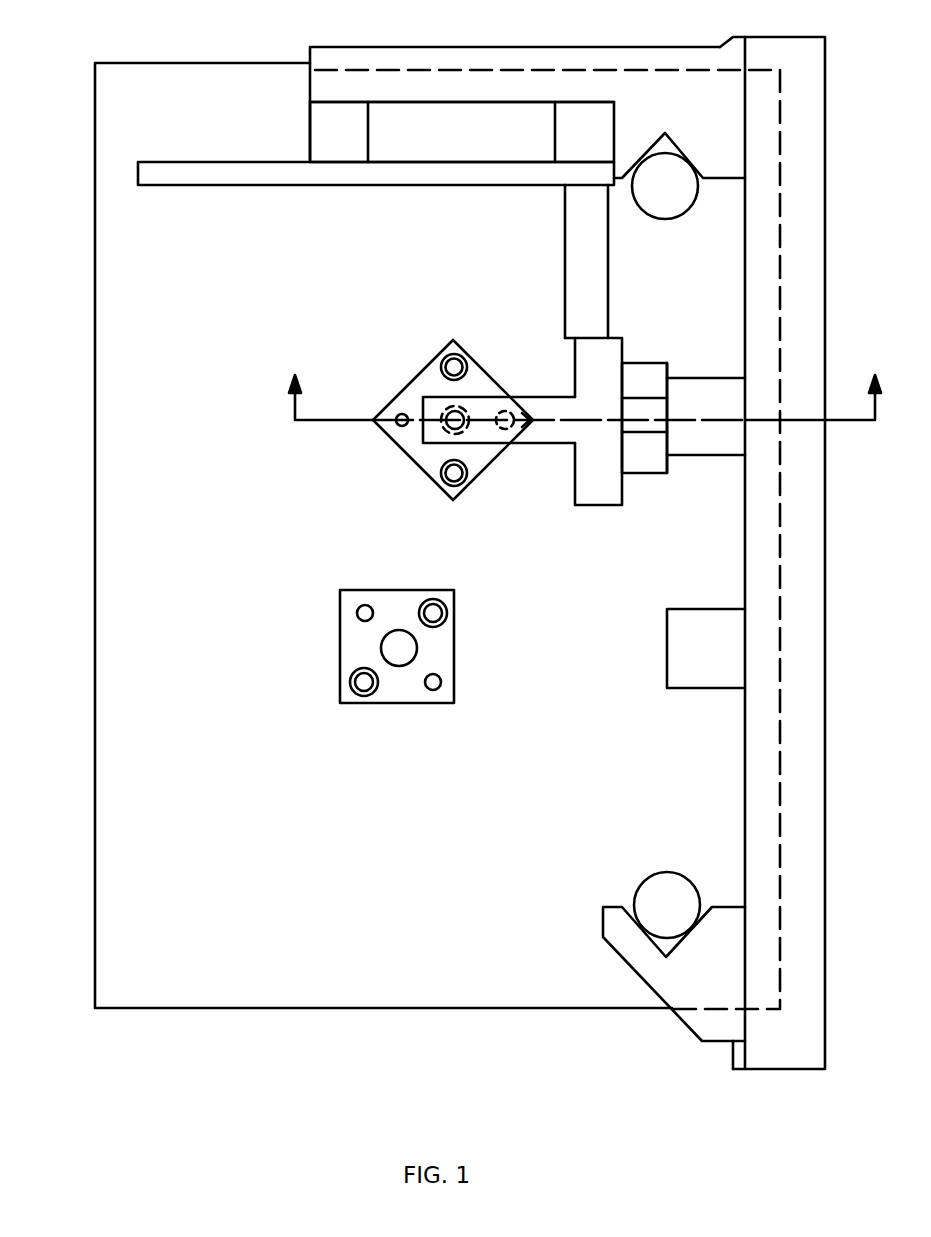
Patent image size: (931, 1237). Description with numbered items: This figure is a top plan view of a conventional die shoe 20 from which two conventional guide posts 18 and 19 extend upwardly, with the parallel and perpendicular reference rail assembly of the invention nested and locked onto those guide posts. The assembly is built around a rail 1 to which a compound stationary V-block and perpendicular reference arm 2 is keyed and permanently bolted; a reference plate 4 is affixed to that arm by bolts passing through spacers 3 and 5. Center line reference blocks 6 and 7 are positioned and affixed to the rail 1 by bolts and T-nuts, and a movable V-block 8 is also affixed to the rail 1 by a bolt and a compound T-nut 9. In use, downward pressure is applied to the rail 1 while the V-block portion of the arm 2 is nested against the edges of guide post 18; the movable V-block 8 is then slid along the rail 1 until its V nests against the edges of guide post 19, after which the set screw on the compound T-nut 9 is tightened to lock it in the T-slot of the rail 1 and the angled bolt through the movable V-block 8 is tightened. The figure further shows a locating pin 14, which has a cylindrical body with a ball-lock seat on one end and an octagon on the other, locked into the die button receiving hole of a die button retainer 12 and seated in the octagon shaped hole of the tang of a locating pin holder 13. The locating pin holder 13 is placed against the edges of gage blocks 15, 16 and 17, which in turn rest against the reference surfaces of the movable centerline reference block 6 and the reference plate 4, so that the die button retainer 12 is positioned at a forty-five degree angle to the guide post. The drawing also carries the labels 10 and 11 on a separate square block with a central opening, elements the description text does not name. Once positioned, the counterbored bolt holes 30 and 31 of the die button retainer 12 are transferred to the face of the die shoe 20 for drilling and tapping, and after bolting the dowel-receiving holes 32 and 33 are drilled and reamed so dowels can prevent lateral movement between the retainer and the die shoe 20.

The rail 1 is at (790, 522).
The compound stationary V-block and perpendicular reference arm 2 is at (377, 90).
The spacer 3 is at (337, 140).
The reference plate 4 is at (422, 173).
The spacer 5 is at (593, 142).
The center line reference block 6 is at (730, 415).
The center line reference block 7 is at (709, 648).
The movable V-block 8 is at (640, 957).
The compound T-nut 9 is at (740, 1052).
The central bore 10 is at (400, 647).
The mounting plate 11 is at (362, 646).
The die button retainer 12 is at (415, 400).
The locating pin holder 13 is at (602, 467).
The locating pin 14 is at (447, 423).
The gage block 15 is at (590, 227).
The gage block 16 is at (643, 387).
The gage block 17 is at (638, 453).
The guide post 18 is at (665, 182).
The guide post 19 is at (666, 906).
The die shoe 20 is at (195, 544).
The counterbored bolt hole 30 is at (453, 477).
The counterbored bolt hole 31 is at (450, 366).
The dowel-receiving hole 32 is at (398, 423).
The dowel-receiving hole 33 is at (503, 422).